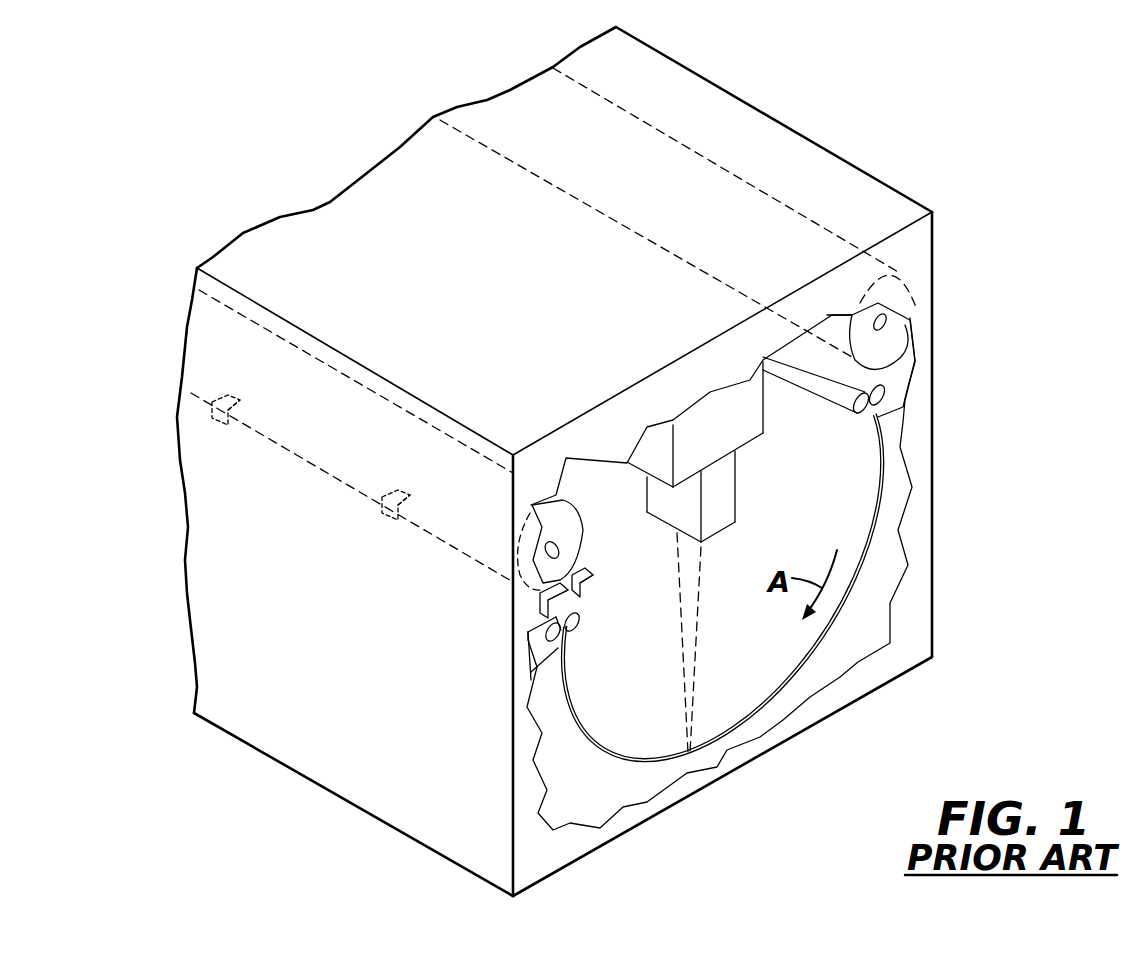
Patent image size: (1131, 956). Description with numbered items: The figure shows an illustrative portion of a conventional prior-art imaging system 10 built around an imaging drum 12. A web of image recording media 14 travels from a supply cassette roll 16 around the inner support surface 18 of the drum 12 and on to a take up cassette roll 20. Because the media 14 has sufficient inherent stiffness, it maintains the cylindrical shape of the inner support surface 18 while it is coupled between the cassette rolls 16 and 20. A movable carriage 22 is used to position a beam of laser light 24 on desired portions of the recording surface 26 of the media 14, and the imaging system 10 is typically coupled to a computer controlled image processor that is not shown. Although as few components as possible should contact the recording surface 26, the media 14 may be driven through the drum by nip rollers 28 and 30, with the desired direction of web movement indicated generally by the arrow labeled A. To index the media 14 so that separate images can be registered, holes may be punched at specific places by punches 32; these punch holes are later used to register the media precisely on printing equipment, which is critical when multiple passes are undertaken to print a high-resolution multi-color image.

The imaging system 10 is at (955, 137).
The imaging drum 12 is at (596, 796).
The web of image recording media 14 is at (843, 500).
The supply cassette roll 16 is at (885, 350).
The inner support surface 18 is at (752, 712).
The take up cassette roll 20 is at (575, 538).
The movable carriage 22 is at (722, 478).
The beam of laser light 24 is at (697, 638).
The recording surface 26 is at (797, 544).
The nip roller 28 is at (863, 407).
The nip roller 30 is at (558, 637).
The punches 32 is at (555, 607).